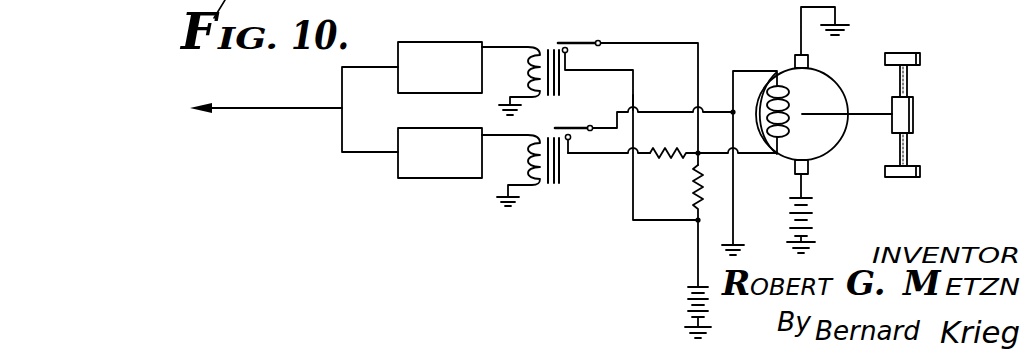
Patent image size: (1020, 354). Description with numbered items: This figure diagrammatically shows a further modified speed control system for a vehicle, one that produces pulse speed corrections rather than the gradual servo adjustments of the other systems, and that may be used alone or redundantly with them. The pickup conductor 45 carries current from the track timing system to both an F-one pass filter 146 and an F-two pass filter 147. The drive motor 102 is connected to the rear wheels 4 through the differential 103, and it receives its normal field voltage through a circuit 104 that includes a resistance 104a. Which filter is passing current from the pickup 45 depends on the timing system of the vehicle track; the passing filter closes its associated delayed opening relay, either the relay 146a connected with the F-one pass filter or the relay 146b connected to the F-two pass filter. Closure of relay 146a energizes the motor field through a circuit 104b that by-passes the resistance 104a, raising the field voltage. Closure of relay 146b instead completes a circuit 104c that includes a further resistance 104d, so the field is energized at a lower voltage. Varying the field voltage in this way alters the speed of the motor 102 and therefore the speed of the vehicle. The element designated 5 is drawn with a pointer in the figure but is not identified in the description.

The tape reel flange 4 is at (918, 55).
The tape 5 is at (469, 210).
The pickup conductor 45 is at (282, 108).
The motor 102 is at (822, 158).
The differential 103 is at (914, 112).
The circuit 104 is at (613, 202).
The resistance 104a is at (694, 212).
The circuit 104b is at (698, 89).
The circuit 104c is at (604, 130).
The further resistance 104d is at (690, 147).
The F1 pass filter 146 is at (414, 42).
The delayed opening relay 146a is at (574, 42).
The delayed opening relay 146b is at (557, 127).
The F2 pass filter 147 is at (411, 178).